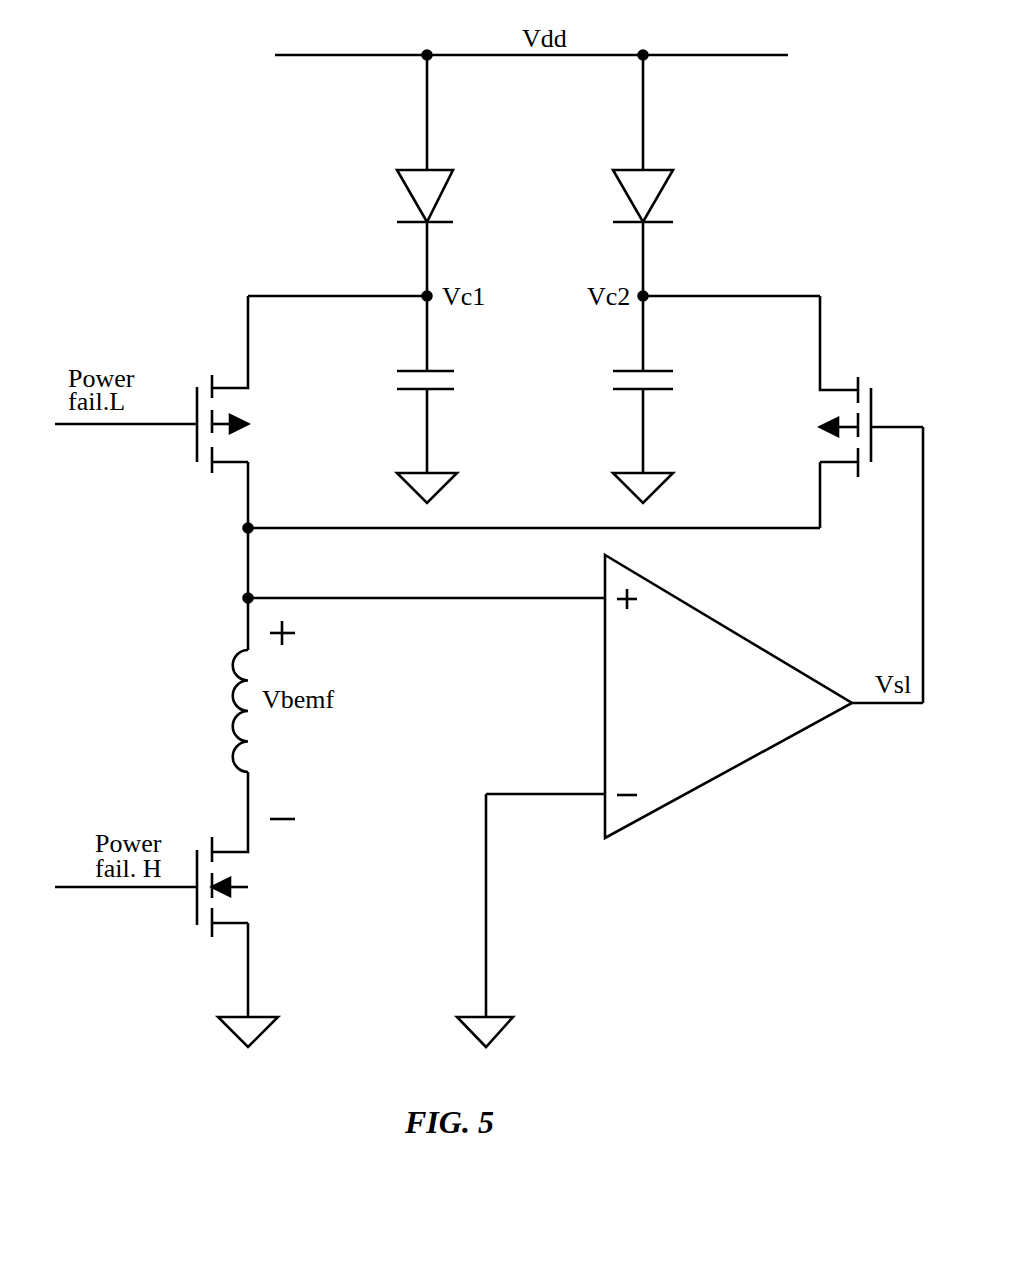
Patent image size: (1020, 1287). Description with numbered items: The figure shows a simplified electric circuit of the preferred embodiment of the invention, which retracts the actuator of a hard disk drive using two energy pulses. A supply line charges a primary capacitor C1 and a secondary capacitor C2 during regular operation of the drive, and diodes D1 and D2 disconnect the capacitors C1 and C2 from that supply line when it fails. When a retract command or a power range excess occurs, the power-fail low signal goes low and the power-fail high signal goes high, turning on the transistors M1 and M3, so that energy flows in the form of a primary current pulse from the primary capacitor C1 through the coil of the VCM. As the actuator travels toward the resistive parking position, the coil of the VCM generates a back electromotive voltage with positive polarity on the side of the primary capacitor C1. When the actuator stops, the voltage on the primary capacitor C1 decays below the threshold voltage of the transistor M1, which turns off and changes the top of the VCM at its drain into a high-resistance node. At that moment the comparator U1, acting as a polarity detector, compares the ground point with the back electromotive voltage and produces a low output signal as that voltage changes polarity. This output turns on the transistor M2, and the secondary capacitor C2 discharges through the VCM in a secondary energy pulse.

The diode D1 is at (403, 175).
The diode D2 is at (661, 175).
The primary capacitor C1 is at (444, 399).
The secondary capacitor C2 is at (622, 399).
The transistor M1 is at (175, 384).
The transistor M2 is at (845, 386).
The transistor M3 is at (174, 854).
The VCM coil VCM is at (200, 711).
The comparator U1 is at (728, 696).